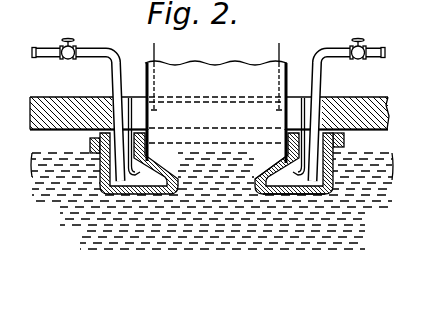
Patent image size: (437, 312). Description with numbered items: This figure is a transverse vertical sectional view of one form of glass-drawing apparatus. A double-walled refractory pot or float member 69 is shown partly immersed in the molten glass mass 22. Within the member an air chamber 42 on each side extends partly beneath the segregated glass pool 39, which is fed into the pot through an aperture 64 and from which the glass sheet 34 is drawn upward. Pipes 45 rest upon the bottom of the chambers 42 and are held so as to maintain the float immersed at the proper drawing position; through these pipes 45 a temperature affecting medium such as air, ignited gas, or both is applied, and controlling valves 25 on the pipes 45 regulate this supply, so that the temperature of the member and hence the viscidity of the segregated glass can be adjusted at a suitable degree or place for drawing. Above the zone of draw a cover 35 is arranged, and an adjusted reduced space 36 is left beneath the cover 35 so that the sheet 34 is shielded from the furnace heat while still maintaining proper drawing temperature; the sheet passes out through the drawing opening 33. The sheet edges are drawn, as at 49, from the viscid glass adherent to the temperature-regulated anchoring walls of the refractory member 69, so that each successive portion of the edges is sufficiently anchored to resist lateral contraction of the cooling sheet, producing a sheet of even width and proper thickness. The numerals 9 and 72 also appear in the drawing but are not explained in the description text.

The rod 9 is at (157, 46).
The molten glass mass 22 is at (55, 208).
The controlling valve 25 is at (67, 39).
The drawing opening 33 is at (128, 98).
The glass sheet 34 is at (247, 67).
The cover 35 is at (50, 84).
The reduced space 36 is at (90, 133).
The segregated glass pool 39 is at (267, 165).
The air chamber 42 is at (107, 194).
The pipe 45 is at (40, 48).
The sheet edges 49 is at (148, 147).
The aperture 64 is at (200, 187).
The double-walled refractory pot 69 is at (327, 195).
The chamber 72 is at (181, 100).